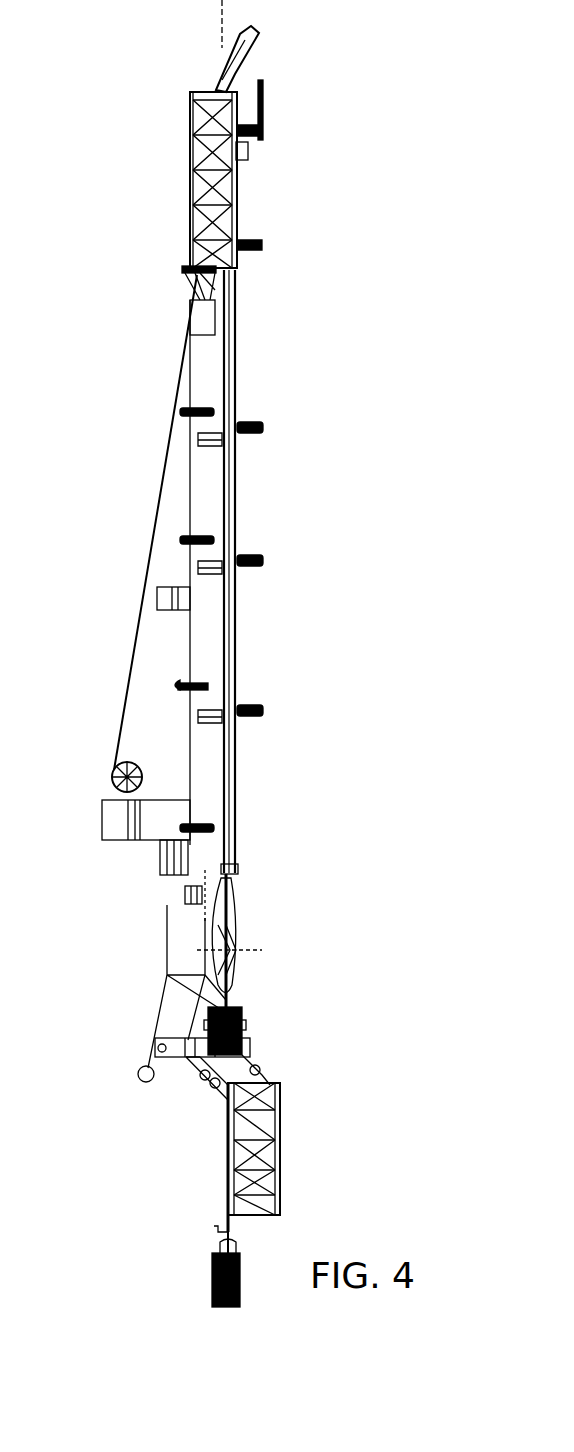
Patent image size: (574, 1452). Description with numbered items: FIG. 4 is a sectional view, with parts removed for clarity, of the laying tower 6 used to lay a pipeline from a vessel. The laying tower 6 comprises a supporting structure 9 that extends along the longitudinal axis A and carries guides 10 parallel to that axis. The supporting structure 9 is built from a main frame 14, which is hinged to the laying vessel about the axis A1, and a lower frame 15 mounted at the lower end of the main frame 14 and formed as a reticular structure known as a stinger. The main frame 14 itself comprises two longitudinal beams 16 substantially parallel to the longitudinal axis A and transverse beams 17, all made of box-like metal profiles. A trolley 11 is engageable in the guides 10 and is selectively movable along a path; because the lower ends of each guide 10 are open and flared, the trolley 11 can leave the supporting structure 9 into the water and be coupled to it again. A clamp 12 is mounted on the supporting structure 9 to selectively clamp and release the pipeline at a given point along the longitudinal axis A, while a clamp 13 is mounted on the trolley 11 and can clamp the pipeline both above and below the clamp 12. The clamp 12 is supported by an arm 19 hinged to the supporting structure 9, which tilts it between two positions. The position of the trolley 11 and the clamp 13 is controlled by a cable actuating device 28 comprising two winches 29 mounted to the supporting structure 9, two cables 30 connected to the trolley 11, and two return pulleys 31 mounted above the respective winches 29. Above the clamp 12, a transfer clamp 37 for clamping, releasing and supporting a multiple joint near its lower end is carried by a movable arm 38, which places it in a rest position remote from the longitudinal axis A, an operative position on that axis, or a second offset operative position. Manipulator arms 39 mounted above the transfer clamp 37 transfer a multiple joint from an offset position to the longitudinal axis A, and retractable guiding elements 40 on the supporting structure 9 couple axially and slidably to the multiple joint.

The longitudinal axis A is at (222, 15).
The axis A1 is at (236, 946).
The laying tower 6 is at (300, 278).
The supporting structure 9 is at (336, 565).
The guides 10 is at (238, 826).
The trolley 11 is at (245, 1252).
The clamp 12 is at (250, 1014).
The clamp 13 is at (208, 1303).
The main frame 14 is at (326, 710).
The lower frame 15 is at (285, 1146).
The longitudinal beams 16 is at (200, 640).
The transverse beams 17 is at (200, 316).
The arm 19 is at (165, 1020).
The cable actuating device 28 is at (108, 720).
The winches 29 is at (112, 785).
The cables 30 is at (155, 605).
The return pulleys 31 is at (192, 272).
The transfer clamp 37 is at (155, 877).
The movable arm 38 is at (186, 900).
The manipulator arms 39 is at (266, 422).
The guiding elements 40 is at (185, 410).